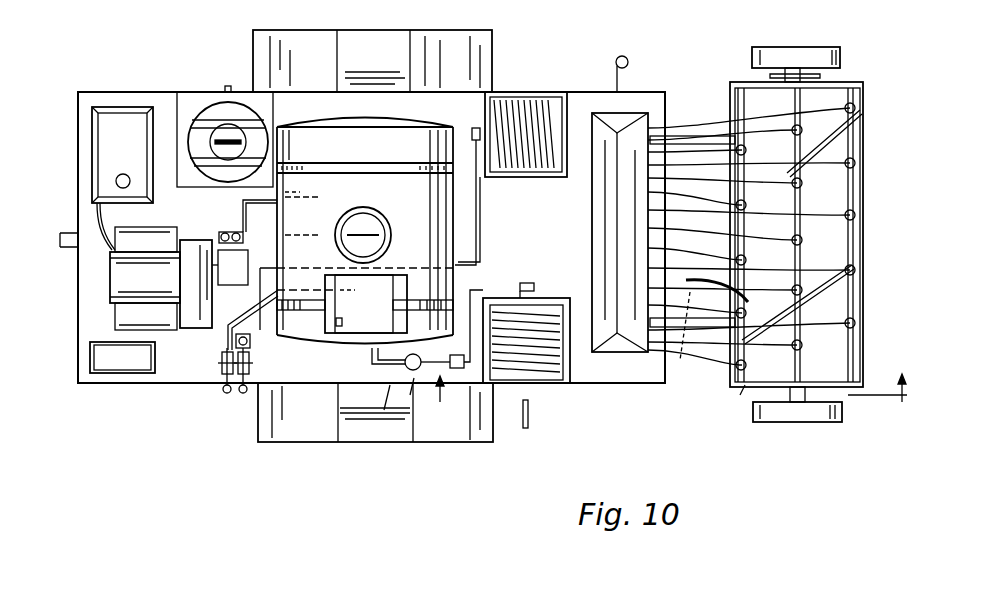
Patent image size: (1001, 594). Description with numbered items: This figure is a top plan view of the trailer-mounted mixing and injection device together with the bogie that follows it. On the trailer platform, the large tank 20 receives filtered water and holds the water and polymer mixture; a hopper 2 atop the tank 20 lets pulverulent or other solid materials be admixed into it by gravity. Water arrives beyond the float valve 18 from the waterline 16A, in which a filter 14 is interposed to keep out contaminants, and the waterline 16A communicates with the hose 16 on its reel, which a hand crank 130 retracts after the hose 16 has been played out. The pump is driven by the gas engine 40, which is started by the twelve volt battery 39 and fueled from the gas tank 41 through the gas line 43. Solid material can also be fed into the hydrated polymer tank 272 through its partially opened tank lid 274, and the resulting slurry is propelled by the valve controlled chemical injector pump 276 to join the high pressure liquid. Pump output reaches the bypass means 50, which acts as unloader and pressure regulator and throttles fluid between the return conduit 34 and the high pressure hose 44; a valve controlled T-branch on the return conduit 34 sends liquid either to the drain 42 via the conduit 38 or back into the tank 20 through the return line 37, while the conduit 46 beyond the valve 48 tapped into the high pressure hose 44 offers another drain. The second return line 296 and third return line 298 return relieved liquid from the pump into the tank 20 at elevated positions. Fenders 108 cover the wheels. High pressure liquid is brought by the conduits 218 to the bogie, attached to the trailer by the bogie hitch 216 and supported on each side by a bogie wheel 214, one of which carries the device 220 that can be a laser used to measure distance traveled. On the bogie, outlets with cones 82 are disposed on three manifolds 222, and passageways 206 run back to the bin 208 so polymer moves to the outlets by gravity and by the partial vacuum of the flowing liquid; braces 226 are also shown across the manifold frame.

The hopper 2 is at (370, 315).
The filter 14 is at (412, 378).
The hose 16 is at (553, 384).
The waterline 16A is at (386, 388).
The float valve 18 is at (669, 401).
The tank 20 is at (408, 155).
The return conduit 34 is at (330, 345).
The return line 37 is at (224, 360).
The conduit 38 is at (240, 376).
The battery 39 is at (132, 369).
The engine 40 is at (155, 286).
The gas tank 41 is at (132, 161).
The drain 42 is at (225, 393).
The gas line 43 is at (100, 235).
The high pressure hose 44 is at (518, 95).
The conduit 46 is at (242, 395).
The valve 48 is at (244, 394).
The bypass means 50 is at (375, 412).
The cone 82 is at (630, 60).
The fender 108 is at (392, 67).
The hand crank 130 is at (528, 430).
The passageway 206 is at (698, 128).
The bin 208 is at (612, 118).
The bogie wheel 214 is at (825, 420).
The bogie hitch 216 is at (738, 386).
The conduit 218 is at (682, 362).
The laser device 220 is at (770, 76).
The manifold 222 is at (852, 95).
The brace 226 is at (855, 122).
The hydrated polymer tank 272 is at (240, 112).
The tank lid 274 is at (224, 128).
The chemical injector pump 276 is at (220, 250).
The second return line 296 is at (297, 225).
The third return line 298 is at (302, 190).